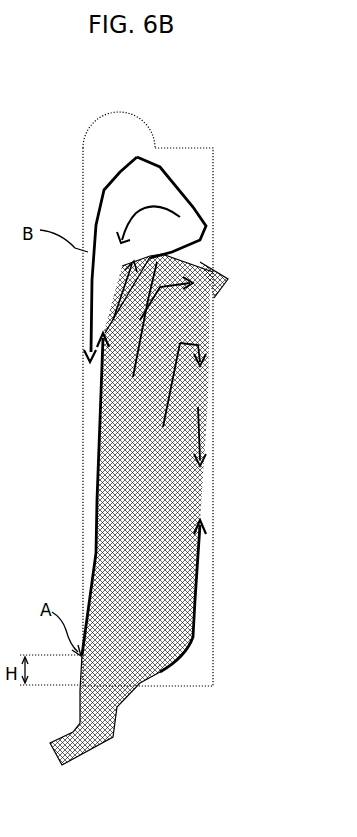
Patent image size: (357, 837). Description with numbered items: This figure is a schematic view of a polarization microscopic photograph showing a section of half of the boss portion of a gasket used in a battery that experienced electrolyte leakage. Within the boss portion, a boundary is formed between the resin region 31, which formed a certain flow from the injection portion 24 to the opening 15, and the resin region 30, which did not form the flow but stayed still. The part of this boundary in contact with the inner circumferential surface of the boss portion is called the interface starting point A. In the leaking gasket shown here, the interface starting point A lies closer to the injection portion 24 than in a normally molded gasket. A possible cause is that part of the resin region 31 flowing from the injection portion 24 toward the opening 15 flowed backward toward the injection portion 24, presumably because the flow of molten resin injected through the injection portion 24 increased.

The resin region 30 is at (111, 146).
The resin region 31 is at (163, 477).
The opening 15 is at (229, 278).
The injection portion 24 is at (93, 742).